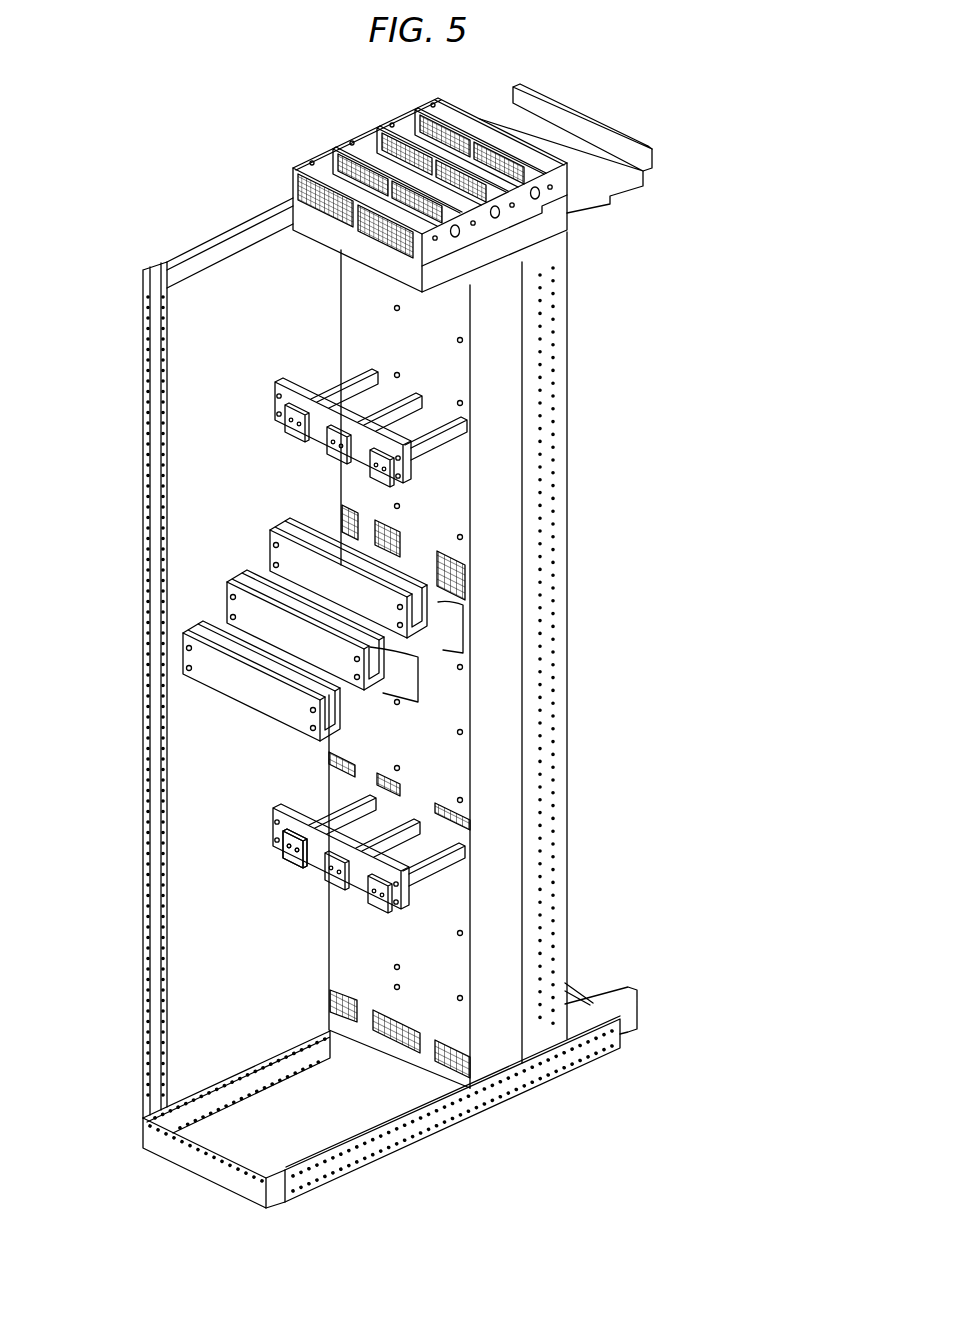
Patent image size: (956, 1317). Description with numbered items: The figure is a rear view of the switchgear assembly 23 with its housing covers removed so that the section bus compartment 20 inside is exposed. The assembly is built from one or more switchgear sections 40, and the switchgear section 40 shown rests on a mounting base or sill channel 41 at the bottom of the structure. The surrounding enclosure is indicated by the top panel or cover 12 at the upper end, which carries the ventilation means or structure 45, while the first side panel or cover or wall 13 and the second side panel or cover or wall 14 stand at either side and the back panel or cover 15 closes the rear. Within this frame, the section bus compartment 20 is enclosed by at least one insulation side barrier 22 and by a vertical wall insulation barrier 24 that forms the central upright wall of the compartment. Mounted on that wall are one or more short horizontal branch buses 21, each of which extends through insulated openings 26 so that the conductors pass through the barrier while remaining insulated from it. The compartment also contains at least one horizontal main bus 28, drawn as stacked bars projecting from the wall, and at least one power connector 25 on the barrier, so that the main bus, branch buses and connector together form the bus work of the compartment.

The switchgear assembly 23 is at (397, 177).
The ventilation means or structure 45 is at (292, 184).
The top panel or cover 12 is at (583, 198).
The second side panel or cover or wall 14 is at (180, 250).
The back panel or cover 15 is at (143, 362).
The first side panel or cover or wall 13 is at (505, 392).
The insulation side barrier 22 is at (500, 752).
The vertical wall insulation barrier 24 is at (350, 318).
The section bus compartment 20 is at (340, 516).
The insulated openings 26 is at (268, 428).
The short horizontal branch bus 21 is at (285, 855).
The horizontal main bus 28 is at (272, 710).
The power connector 25 is at (445, 607).
The switchgear section 40 is at (390, 1095).
The mounting base or sill channel 41 is at (553, 1065).